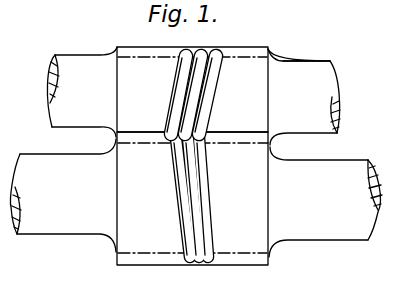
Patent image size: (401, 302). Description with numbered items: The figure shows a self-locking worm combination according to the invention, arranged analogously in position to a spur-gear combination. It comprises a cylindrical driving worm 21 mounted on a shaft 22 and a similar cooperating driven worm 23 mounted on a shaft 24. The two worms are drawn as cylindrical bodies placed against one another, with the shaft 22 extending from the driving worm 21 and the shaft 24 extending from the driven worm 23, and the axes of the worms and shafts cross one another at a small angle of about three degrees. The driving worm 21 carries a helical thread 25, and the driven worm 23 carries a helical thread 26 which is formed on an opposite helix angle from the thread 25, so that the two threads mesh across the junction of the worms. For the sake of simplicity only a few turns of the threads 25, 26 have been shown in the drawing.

The driving worm 21 is at (247, 62).
The shaft 22 is at (305, 63).
The driven worm 23 is at (245, 252).
The shaft 24 is at (327, 240).
The helical thread 25 is at (213, 50).
The helical thread 26 is at (200, 263).